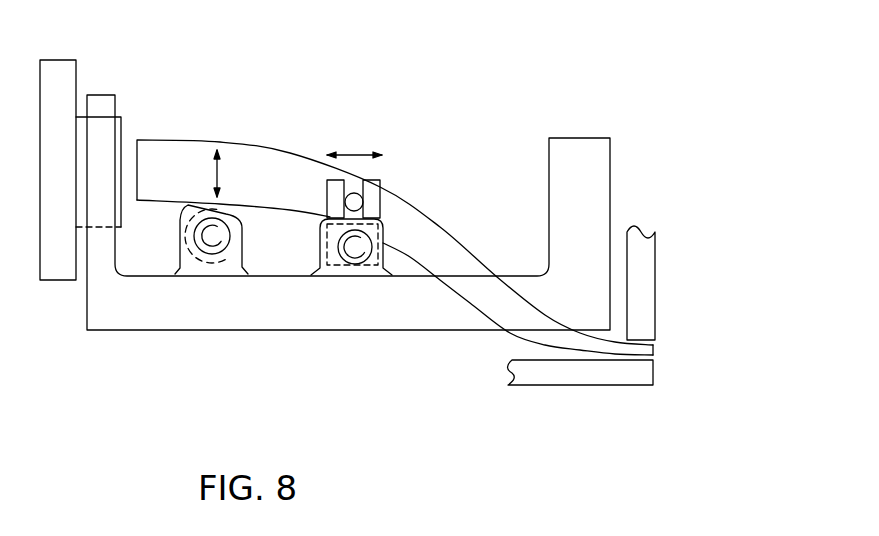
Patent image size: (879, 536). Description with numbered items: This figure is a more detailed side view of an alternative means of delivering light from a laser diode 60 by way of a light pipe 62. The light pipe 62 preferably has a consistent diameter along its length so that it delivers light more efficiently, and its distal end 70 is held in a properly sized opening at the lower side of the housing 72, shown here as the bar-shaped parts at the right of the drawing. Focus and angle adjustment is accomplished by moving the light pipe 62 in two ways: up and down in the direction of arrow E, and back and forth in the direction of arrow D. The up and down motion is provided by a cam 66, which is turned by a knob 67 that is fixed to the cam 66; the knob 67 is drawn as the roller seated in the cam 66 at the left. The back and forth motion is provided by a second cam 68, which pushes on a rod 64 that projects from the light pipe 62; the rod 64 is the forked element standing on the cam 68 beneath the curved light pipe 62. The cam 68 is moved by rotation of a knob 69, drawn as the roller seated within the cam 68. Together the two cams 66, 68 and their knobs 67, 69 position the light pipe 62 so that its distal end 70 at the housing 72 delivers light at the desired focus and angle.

The laser diode 60 is at (82, 133).
The light pipe 62 is at (195, 140).
The rod 64 is at (354, 202).
The cam 66 is at (185, 206).
The knob 67 is at (215, 240).
The cam 68 is at (383, 257).
The knob 69 is at (355, 250).
The distal end 70 is at (653, 347).
The housing 72 is at (657, 283).